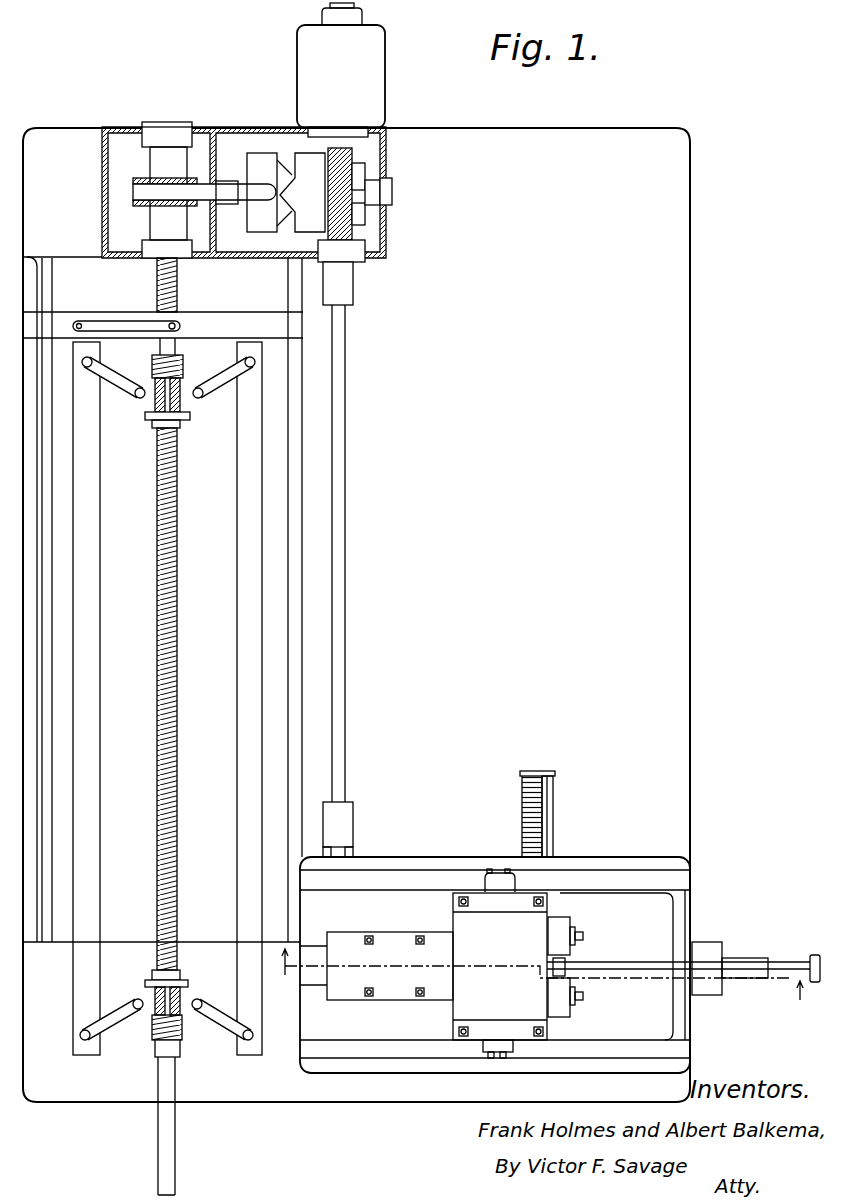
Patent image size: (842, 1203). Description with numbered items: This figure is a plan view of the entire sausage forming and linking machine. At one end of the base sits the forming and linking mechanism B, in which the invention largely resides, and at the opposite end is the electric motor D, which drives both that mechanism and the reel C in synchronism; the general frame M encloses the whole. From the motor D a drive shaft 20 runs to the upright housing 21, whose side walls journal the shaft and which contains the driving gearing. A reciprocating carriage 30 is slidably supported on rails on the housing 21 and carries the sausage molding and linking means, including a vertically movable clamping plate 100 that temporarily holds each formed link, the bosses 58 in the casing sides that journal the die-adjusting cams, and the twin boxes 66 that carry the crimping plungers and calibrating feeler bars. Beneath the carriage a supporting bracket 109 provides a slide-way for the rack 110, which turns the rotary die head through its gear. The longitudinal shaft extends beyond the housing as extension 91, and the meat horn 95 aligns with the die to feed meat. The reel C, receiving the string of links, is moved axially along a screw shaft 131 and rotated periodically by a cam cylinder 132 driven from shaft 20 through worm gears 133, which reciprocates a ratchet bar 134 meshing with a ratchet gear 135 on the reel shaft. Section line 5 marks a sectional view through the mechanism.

The main frame M is at (680, 535).
The electric motor D is at (385, 93).
The ratchet gear 135 is at (147, 183).
The ratchet bar 134 is at (133, 190).
The cam cylinder 132 is at (262, 155).
The worm gears 133 is at (368, 220).
The drive shaft 20 is at (346, 616).
The screw shaft 131 is at (178, 638).
The reel C is at (240, 498).
The rack 110 is at (529, 791).
The supporting bracket 109 is at (553, 791).
The forming and linking mechanism B is at (297, 1025).
The upright housing 21 is at (430, 855).
The reciprocating carriage 30 is at (368, 895).
The clamping plate 100 is at (352, 1000).
The bosses 58 is at (490, 920).
The twin boxes 66 is at (565, 983).
The horn 95 is at (703, 965).
The drive shaft extension 91 is at (750, 962).
The section line 5 is at (535, 989).